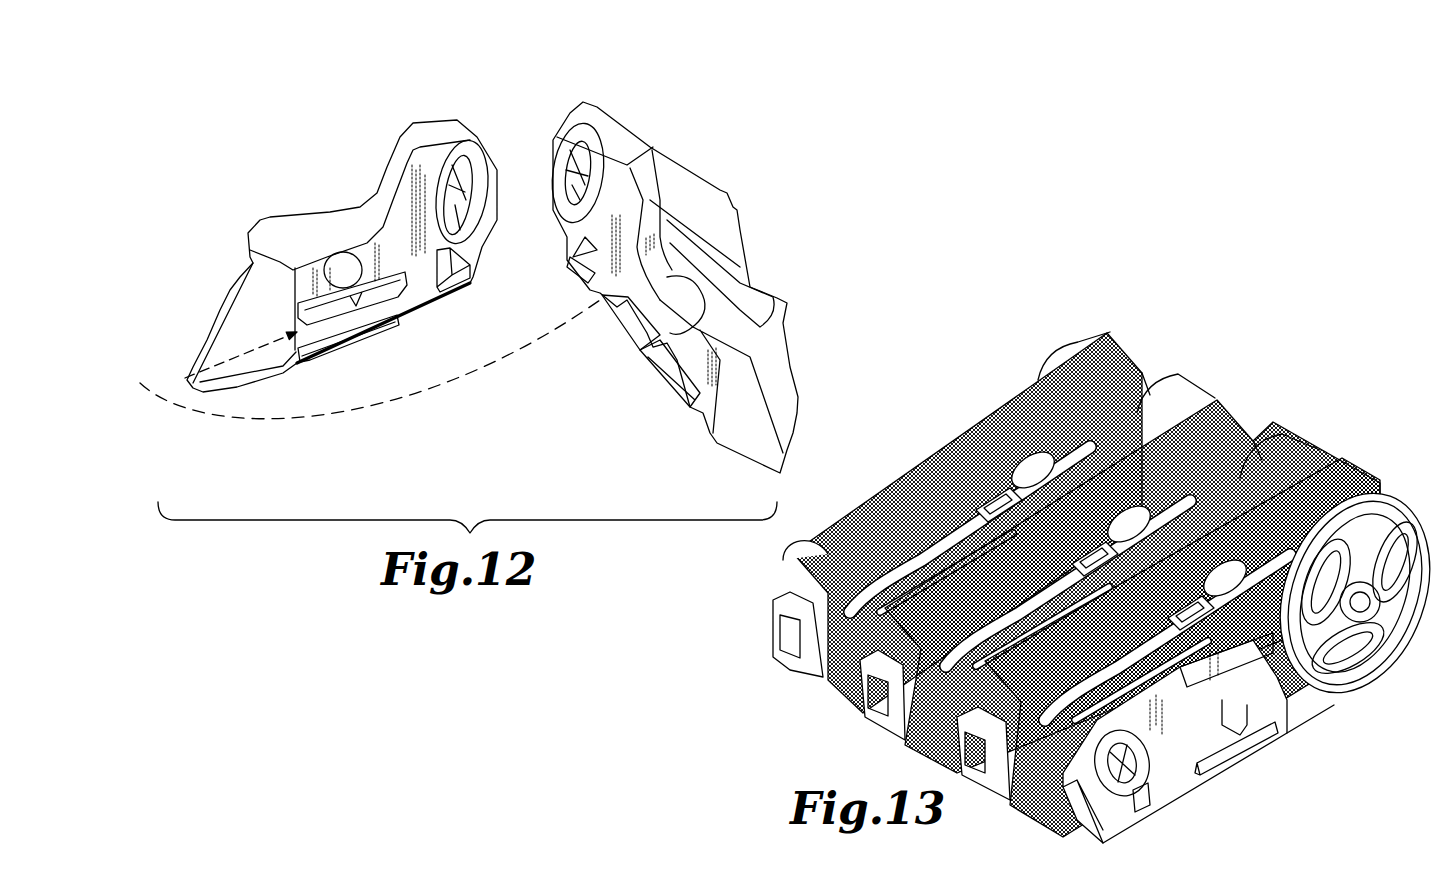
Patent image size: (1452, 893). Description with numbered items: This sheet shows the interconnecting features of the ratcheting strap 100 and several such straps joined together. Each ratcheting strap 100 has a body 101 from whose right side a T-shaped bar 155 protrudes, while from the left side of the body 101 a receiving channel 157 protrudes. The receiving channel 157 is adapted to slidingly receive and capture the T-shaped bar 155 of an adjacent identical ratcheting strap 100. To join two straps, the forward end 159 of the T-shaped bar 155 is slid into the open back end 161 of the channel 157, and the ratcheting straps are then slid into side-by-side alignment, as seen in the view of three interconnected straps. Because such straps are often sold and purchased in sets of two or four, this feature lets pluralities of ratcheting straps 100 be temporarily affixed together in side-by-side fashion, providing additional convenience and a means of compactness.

In FIG. 12, the ratcheting strap 100 is at (302, 219).
In FIG. 13, the ratcheting strap 100 is at (1106, 341).
In FIG. 12, the body 101 is at (458, 128).
In FIG. 12, the T-shaped bar 155 is at (640, 350).
In FIG. 13, the T-shaped bar 155 is at (1235, 773).
In FIG. 12, the receiving channel 157 is at (402, 316).
In FIG. 12, the forward end 159 is at (610, 313).
In FIG. 12, the open back end 161 is at (312, 338).